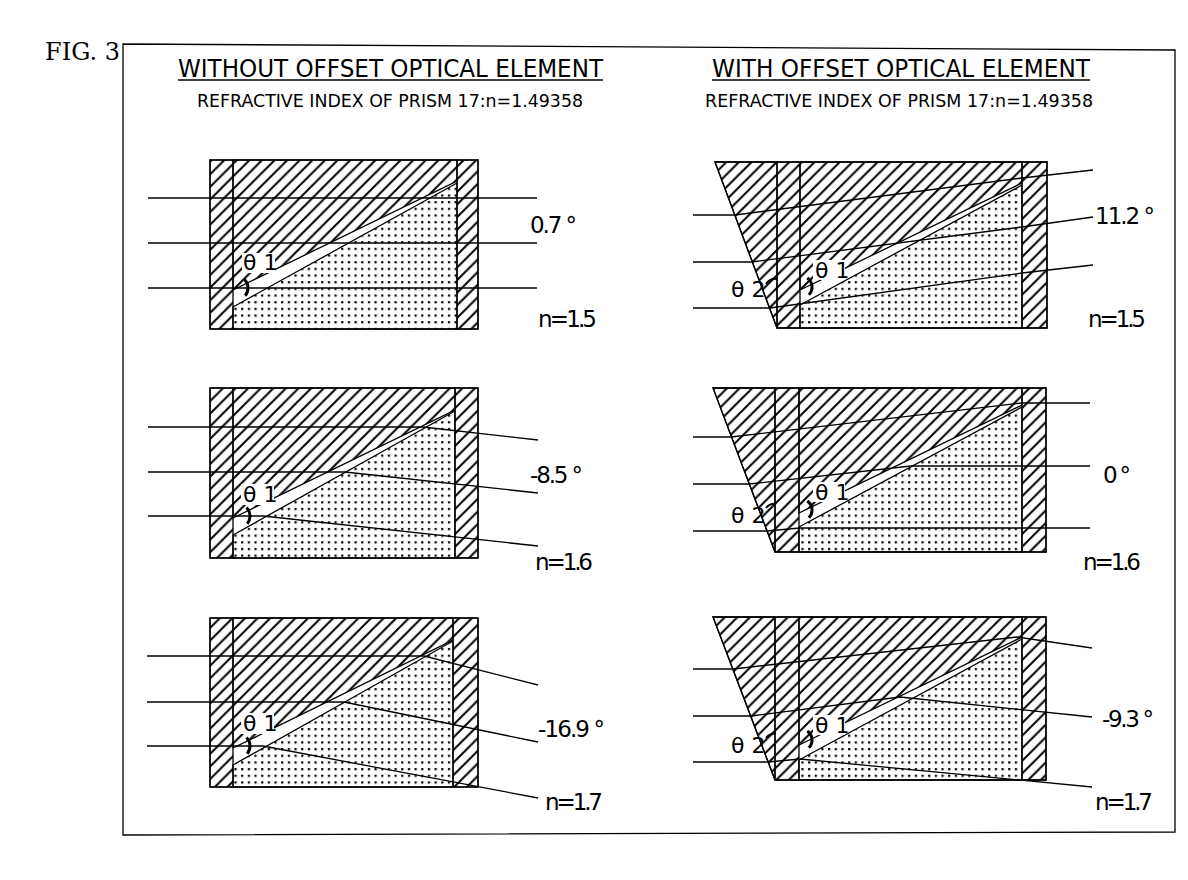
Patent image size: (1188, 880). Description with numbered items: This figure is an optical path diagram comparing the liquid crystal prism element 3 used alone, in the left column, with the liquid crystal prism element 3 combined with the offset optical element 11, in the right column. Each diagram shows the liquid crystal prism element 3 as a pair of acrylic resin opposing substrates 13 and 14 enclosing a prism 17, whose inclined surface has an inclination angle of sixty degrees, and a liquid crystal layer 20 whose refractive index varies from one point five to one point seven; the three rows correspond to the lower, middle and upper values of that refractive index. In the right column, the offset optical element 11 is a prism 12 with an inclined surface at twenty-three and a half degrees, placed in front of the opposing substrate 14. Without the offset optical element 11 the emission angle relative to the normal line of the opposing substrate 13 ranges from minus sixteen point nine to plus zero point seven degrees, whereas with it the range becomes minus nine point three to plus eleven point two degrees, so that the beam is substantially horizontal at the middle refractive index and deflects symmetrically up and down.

The liquid crystal prism element 3 is at (492, 175).
The offset optical element 11 is at (751, 136).
The prism 12 is at (747, 162).
The opposing substrate 13 is at (467, 158).
The opposing substrate 14 is at (223, 158).
The prism 17 is at (327, 158).
The liquid crystal layer 20 is at (428, 320).